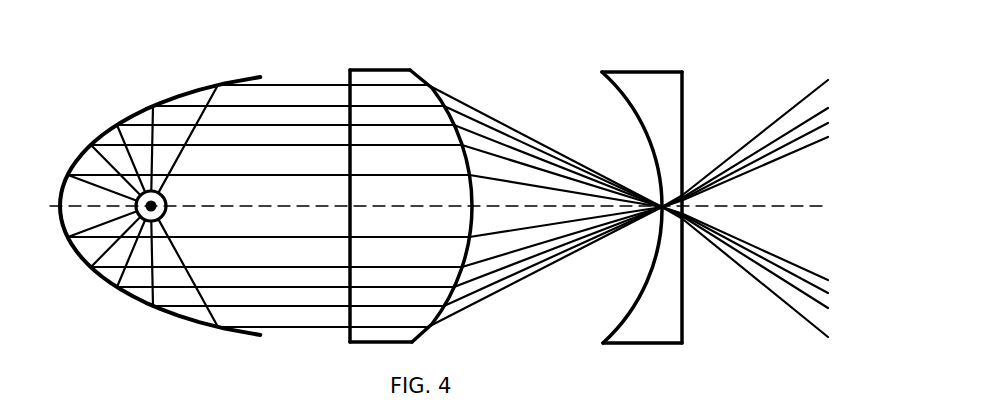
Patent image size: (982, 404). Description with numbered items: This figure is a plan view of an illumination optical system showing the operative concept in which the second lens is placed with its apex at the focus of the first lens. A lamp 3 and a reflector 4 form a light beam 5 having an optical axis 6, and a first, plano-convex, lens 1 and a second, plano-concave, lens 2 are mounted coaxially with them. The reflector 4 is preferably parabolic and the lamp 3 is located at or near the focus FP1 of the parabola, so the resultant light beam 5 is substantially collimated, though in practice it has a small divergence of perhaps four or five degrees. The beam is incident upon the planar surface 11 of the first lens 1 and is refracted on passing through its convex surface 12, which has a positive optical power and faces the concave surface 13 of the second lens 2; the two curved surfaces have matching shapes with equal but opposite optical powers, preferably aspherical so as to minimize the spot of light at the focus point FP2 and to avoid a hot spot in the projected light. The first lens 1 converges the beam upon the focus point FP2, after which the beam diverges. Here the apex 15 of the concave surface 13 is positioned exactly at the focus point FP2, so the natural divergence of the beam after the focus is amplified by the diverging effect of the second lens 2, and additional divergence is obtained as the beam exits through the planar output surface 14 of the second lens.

The first lens 1 is at (384, 171).
The planar surface 11 is at (348, 85).
The convex surface 12 is at (423, 72).
The second lens 2 is at (621, 173).
The concave surface 13 is at (618, 92).
The planar output surface 14 is at (685, 97).
The lamp 3 is at (144, 220).
The reflector 4 is at (237, 332).
The light beam 5 is at (310, 327).
The optical axis 6 is at (258, 206).
The apex 15 is at (661, 208).
The focus of the parabola FP1 is at (147, 191).
The focus point of the first lens FP2 is at (660, 205).